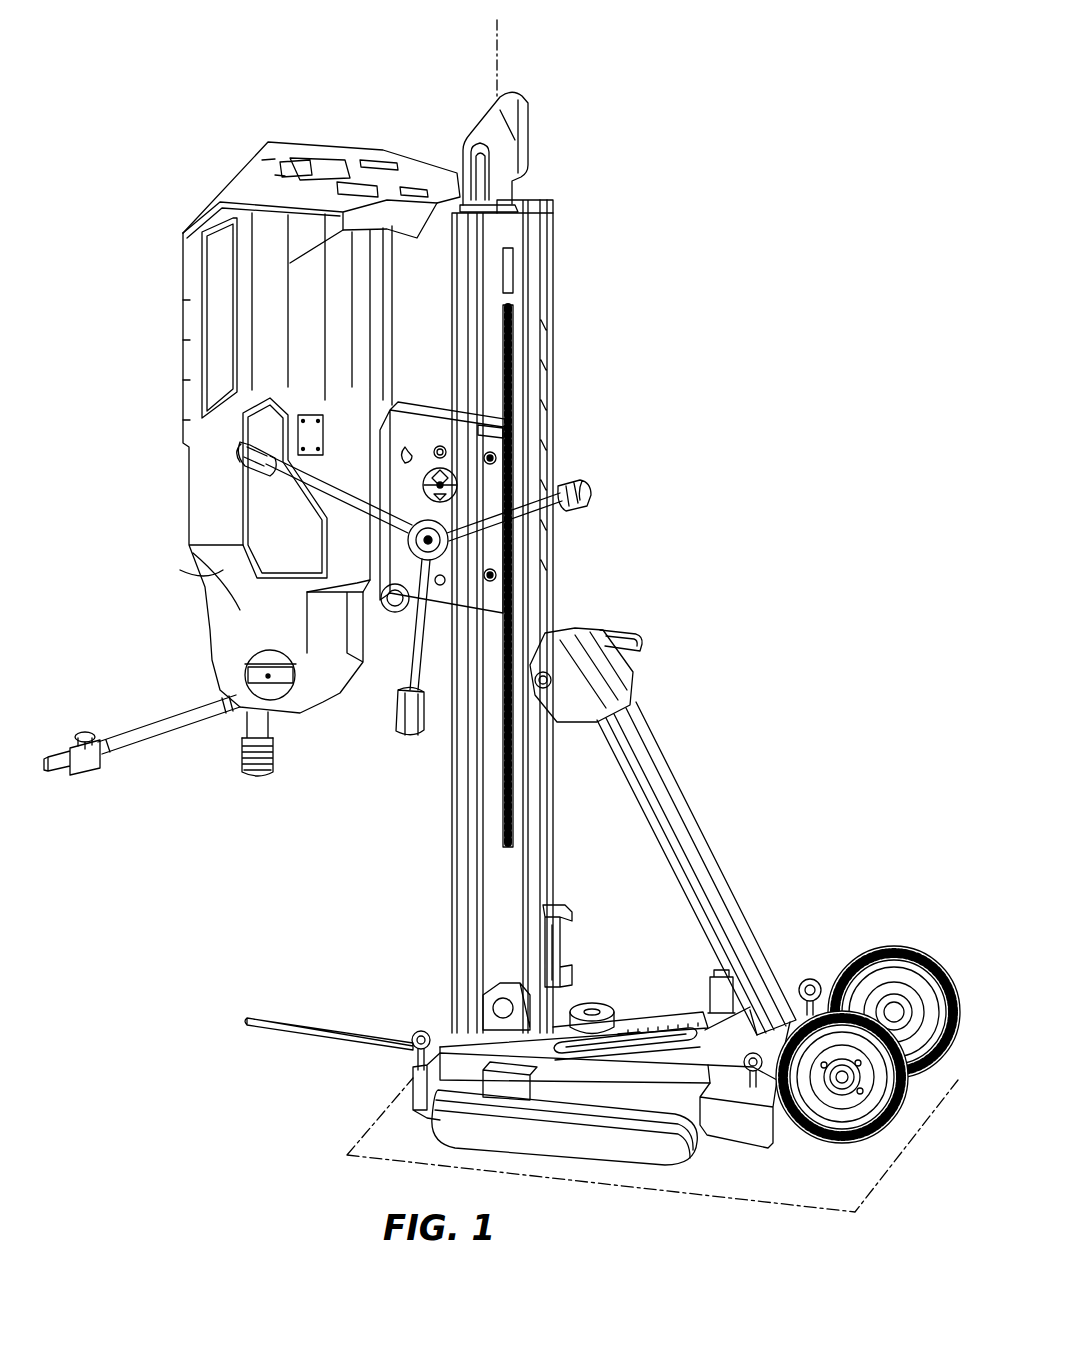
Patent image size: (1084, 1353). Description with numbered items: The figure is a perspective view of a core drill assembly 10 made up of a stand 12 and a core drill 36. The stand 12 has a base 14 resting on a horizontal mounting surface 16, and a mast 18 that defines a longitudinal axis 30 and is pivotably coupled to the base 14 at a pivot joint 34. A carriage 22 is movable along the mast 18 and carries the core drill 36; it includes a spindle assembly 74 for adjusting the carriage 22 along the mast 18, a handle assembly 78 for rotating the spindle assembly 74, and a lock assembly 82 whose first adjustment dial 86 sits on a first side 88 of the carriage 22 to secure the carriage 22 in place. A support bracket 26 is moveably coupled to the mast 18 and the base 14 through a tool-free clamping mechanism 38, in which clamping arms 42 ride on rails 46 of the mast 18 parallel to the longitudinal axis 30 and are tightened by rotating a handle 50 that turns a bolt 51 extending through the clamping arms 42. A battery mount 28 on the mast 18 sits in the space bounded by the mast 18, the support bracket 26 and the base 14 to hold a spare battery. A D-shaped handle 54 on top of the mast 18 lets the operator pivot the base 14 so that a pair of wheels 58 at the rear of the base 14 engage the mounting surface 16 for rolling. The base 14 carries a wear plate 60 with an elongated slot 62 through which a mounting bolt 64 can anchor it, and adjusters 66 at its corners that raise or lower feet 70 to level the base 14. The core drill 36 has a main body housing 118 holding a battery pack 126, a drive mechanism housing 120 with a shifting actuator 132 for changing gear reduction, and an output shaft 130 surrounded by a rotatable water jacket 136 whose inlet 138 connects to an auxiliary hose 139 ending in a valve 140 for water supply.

The core drill assembly 10 is at (686, 207).
The stand 12 is at (740, 685).
The base 14 is at (720, 1132).
The mounting surface 16 is at (813, 1195).
The mast 18 is at (512, 287).
The carriage 22 is at (482, 503).
The support bracket 26 is at (682, 820).
The battery mount 28 is at (566, 930).
The longitudinal axis 30 is at (491, 64).
The pivot joint 34 is at (500, 1010).
The core drill 36 is at (160, 351).
The clamping mechanism 38 is at (614, 605).
The clamping arms 42 is at (565, 705).
The rails 46 is at (556, 577).
The handle 50 is at (632, 634).
The bolt 51 is at (560, 688).
The handle 54 is at (502, 127).
The wheels 58 is at (878, 952).
The wear plate 60 is at (665, 1028).
The elongated slot 62 is at (628, 1010).
The mounting bolt 64 is at (593, 1003).
The adjusters 66 is at (420, 1030).
The feet 70 is at (410, 1128).
The spindle assembly 74 is at (450, 541).
The handle assembly 78 is at (601, 494).
The lock assembly 82 is at (470, 454).
The first adjustment dial 86 is at (440, 440).
The first side 88 is at (483, 432).
The main body housing 118 is at (215, 490).
The drive mechanism housing 120 is at (225, 580).
The battery pack 126 is at (220, 247).
The output shaft 130 is at (248, 750).
The shifting actuator 132 is at (265, 660).
The water jacket 136 is at (268, 735).
The inlet 138 is at (236, 712).
The auxiliary hose 139 is at (147, 725).
The valve 140 is at (90, 755).